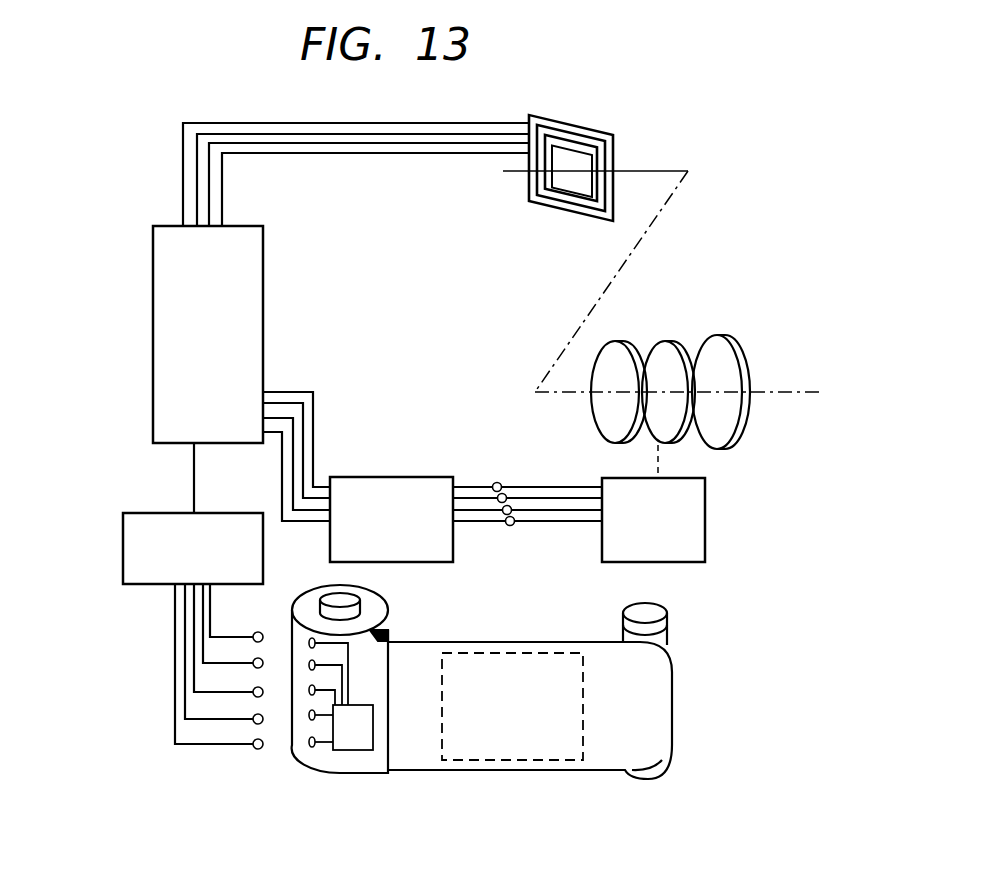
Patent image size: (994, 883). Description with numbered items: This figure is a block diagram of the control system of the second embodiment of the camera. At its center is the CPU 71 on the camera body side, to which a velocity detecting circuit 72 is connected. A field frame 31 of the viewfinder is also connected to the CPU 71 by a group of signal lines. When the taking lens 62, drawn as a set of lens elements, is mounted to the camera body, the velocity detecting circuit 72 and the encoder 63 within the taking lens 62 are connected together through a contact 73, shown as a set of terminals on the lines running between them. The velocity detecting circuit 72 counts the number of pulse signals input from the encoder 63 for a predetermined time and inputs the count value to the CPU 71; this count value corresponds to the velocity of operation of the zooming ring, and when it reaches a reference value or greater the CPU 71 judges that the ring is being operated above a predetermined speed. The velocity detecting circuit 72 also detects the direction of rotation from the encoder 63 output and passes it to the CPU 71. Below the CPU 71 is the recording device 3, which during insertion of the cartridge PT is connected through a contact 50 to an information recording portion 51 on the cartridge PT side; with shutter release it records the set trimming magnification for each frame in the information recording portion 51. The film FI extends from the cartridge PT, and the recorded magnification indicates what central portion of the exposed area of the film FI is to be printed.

The CPU 71 is at (265, 248).
The field frame 31 is at (613, 140).
The taking lens 62 is at (594, 424).
The velocity detecting circuit 72 is at (425, 477).
The contact 73 is at (511, 526).
The encoder 63 is at (705, 505).
The recording device 3 is at (128, 513).
The contact 50 is at (308, 746).
The information recording portion 51 is at (350, 742).
The cartridge PT is at (381, 603).
The film FI is at (545, 772).